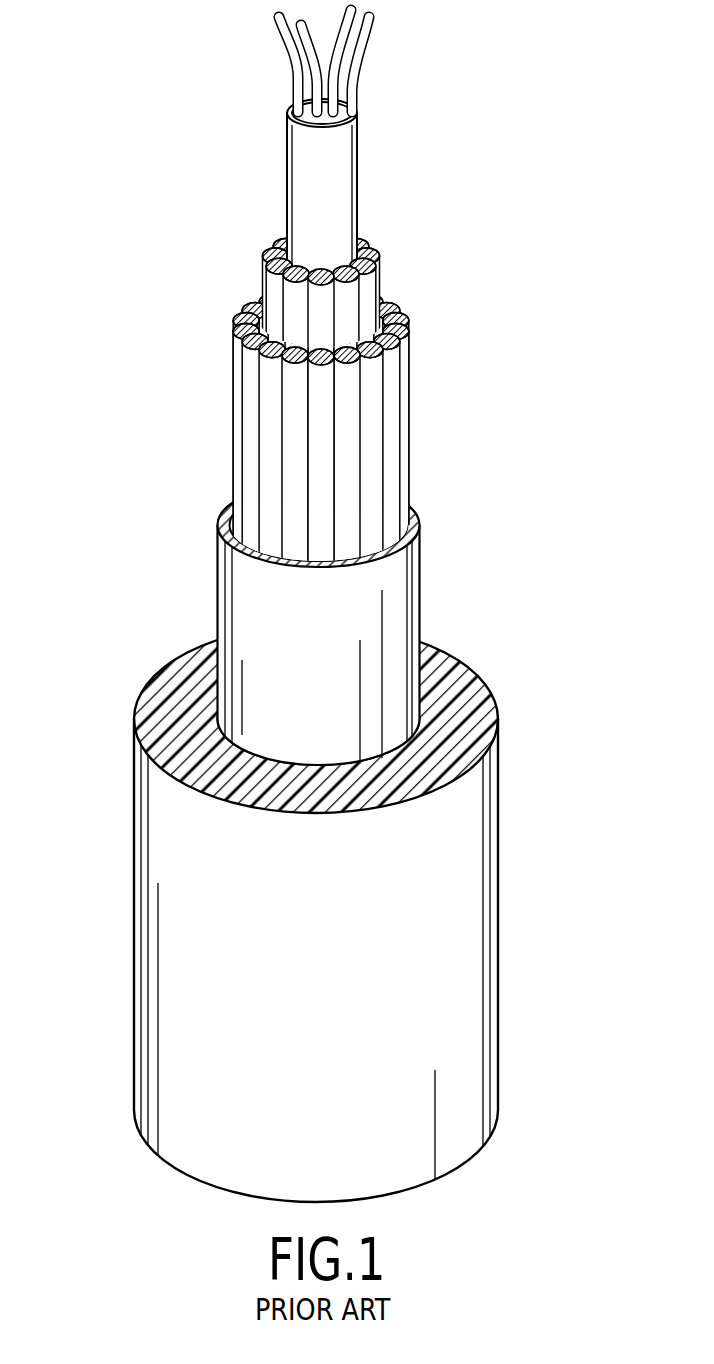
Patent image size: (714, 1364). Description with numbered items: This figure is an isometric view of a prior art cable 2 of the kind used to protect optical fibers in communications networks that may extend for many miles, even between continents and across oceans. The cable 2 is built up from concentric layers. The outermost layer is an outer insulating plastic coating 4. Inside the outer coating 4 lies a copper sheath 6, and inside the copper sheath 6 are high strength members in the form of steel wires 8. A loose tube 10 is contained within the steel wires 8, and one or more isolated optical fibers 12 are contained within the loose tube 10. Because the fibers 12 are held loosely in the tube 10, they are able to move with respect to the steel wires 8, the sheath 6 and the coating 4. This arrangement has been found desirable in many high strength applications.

The cable 2 is at (148, 302).
The outer insulating plastic coating 4 is at (498, 934).
The copper sheath 6 is at (421, 604).
The steel wires 8 is at (410, 418).
The loose tube 10 is at (288, 172).
The optical fibers 12 is at (292, 74).